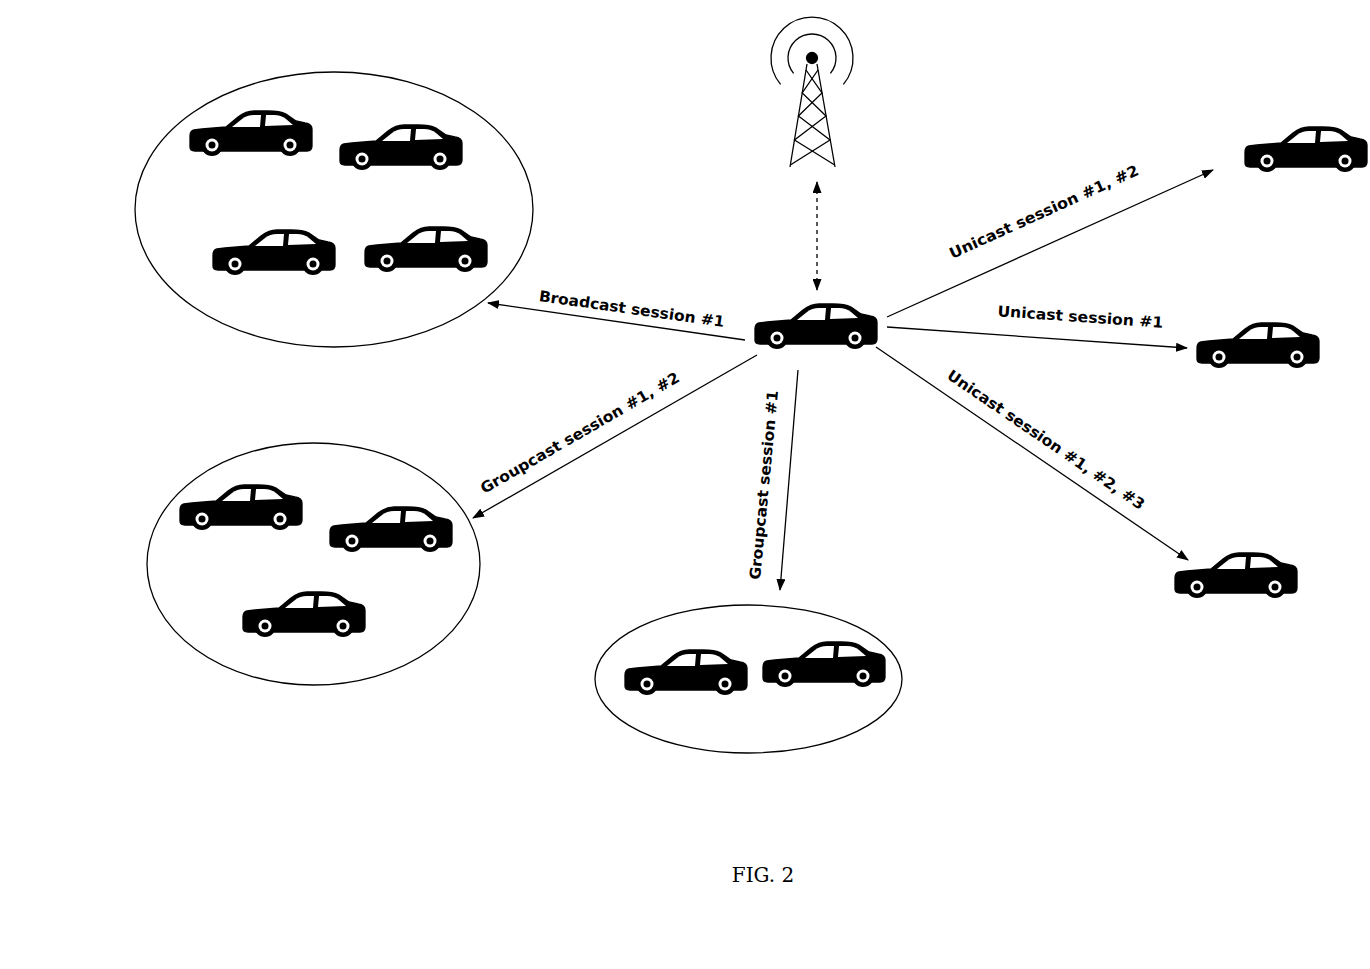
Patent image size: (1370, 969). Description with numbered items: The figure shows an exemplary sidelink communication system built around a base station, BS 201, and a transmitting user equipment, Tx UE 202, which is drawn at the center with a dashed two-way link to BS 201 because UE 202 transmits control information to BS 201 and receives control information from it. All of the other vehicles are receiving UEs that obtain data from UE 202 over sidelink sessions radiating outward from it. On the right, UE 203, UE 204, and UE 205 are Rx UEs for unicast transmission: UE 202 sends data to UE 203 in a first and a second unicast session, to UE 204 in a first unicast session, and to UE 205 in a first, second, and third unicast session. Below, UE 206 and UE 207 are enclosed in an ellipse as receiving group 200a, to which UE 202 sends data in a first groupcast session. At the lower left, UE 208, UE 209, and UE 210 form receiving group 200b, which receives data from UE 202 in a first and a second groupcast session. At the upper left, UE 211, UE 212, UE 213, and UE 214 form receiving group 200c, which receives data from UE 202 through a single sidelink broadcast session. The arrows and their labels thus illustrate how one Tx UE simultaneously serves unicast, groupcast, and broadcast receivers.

The receiving group 200a is at (897, 655).
The receiving group 200b is at (280, 445).
The receiving group 200c is at (487, 113).
The base station 201 is at (831, 92).
The Tx UE 202 is at (803, 352).
The Rx UE for unicast transmission 203 is at (1306, 174).
The Rx UE for unicast transmission 204 is at (1258, 369).
The Rx UE for unicast transmission 205 is at (1236, 599).
The Rx UE for groupcast transmission 206 is at (686, 695).
The Rx UE for groupcast transmission 207 is at (824, 687).
The Rx UE for groupcast transmission 208 is at (241, 531).
The Rx UE for groupcast transmission 209 is at (391, 548).
The Rx UE for groupcast transmission 210 is at (304, 635).
The Rx UE for broadcast transmission 211 is at (251, 156).
The Rx UE for broadcast transmission 212 is at (401, 164).
The Rx UE for broadcast transmission 213 is at (274, 276).
The Rx UE for broadcast transmission 214 is at (426, 273).